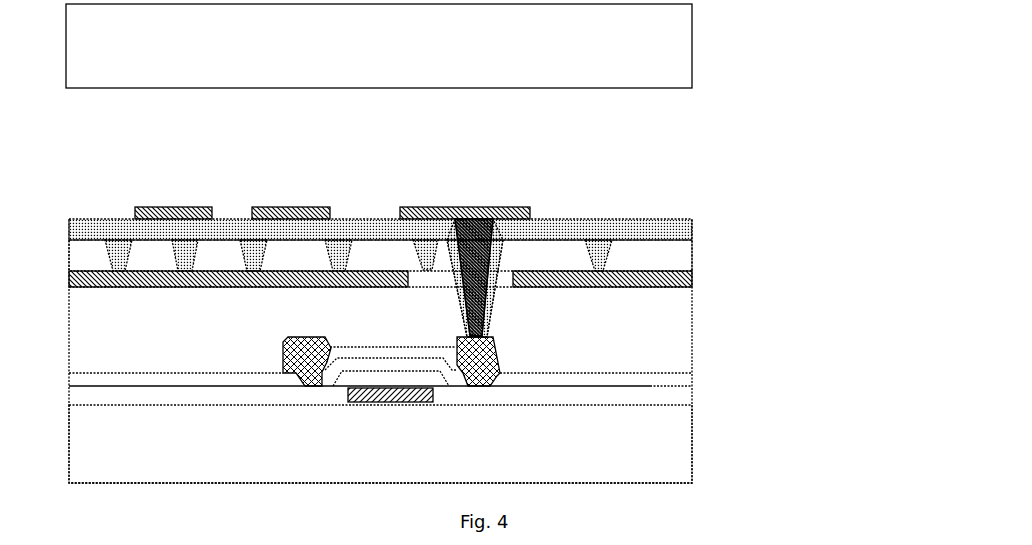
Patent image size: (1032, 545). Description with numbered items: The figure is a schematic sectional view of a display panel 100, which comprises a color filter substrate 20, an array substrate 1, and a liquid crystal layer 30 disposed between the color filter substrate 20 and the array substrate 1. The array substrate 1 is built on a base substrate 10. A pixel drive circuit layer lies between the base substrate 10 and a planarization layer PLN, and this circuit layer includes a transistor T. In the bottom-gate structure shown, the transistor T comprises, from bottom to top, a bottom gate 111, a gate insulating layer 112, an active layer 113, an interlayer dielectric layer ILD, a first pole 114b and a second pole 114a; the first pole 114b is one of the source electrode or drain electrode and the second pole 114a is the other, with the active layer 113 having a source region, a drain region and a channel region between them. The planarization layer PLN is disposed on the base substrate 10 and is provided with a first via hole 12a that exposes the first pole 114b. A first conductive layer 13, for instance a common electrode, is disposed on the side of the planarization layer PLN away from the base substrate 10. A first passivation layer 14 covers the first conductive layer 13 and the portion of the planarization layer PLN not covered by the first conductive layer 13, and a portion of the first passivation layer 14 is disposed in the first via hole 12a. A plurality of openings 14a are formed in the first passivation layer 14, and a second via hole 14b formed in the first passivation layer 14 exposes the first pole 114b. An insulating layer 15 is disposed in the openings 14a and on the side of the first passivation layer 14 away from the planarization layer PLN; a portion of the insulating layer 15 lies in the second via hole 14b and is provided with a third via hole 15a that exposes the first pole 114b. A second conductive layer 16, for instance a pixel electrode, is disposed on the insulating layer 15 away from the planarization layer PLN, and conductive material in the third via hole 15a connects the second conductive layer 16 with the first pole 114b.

The display panel 100 is at (871, 51).
The color filter (CF) substrate 20 is at (668, 49).
The liquid crystal layer 30 is at (662, 125).
The array substrate 1 is at (655, 202).
The base substrate 10 is at (685, 442).
The bottom gate 111 is at (385, 403).
The gate insulating layer 112 is at (555, 405).
The active layer 113 is at (388, 350).
The second pole 114a is at (310, 337).
The first pole 114b is at (497, 380).
The transistor T is at (348, 402).
The interlayer dielectric layer ILD is at (680, 383).
The planarization layer PLN is at (697, 307).
The first via hole 12a is at (500, 345).
The first conductive layer 13 is at (215, 288).
The first passivation layer 14 is at (680, 265).
The openings 14a is at (433, 245).
The second via hole 14b is at (486, 318).
The insulating layer 15 is at (677, 232).
The third via hole 15a is at (491, 292).
The second conductive layer 16 is at (178, 206).